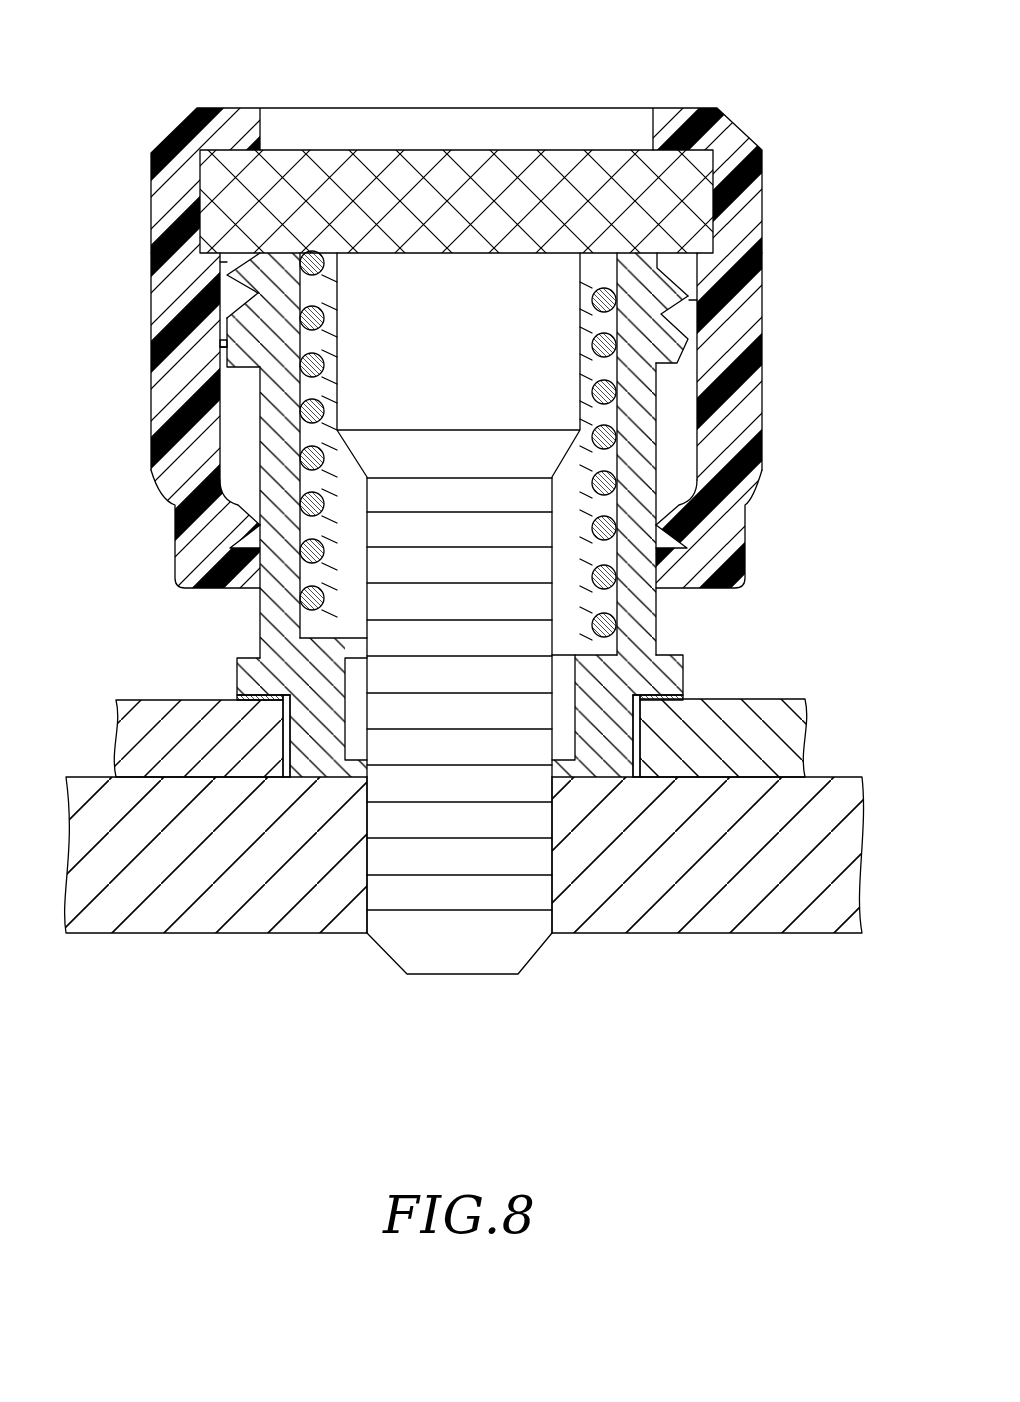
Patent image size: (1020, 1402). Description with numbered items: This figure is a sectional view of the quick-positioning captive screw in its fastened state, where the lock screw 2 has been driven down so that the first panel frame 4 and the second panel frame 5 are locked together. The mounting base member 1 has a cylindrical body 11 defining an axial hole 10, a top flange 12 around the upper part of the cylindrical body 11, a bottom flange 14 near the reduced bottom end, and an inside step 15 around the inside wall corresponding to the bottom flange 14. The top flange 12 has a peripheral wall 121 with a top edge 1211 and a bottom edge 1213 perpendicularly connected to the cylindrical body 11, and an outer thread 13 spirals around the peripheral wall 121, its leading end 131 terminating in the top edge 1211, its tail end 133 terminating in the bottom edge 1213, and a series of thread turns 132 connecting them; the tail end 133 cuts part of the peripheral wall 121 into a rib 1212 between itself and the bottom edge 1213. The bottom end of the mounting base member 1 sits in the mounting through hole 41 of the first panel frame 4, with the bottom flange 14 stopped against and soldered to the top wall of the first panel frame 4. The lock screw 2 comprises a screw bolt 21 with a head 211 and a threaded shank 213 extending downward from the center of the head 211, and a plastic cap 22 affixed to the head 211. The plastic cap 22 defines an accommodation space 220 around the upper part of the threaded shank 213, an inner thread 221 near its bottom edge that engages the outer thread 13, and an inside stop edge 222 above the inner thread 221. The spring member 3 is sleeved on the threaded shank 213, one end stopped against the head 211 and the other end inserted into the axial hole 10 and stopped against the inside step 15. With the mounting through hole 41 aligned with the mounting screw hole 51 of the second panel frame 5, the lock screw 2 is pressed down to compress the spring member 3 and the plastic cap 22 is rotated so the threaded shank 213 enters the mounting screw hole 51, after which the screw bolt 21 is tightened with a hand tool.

The mounting base member 1 is at (659, 473).
The axial hole 10 is at (619, 443).
The cylindrical body 11 is at (662, 517).
The top flange 12 is at (636, 400).
The peripheral wall 121 is at (690, 350).
The top edge 1211 is at (669, 276).
The rib 1212 is at (240, 368).
The bottom edge 1213 is at (232, 379).
The outer thread 13 is at (764, 258).
The leading end 131 is at (256, 262).
The thread turns 132 is at (690, 300).
The tail end 133 is at (231, 349).
The bottom flange 14 is at (677, 670).
The inside step 15 is at (594, 657).
The lock screw 2 is at (151, 95).
The screw bolt 21 is at (467, 147).
The head 211 is at (392, 150).
The threaded shank 213 is at (443, 671).
The plastic cap 22 is at (147, 235).
The accommodation space 220 is at (235, 438).
The inner thread 221 is at (219, 565).
The inside stop edge 222 is at (240, 478).
The spring member 3 is at (306, 602).
The first panel frame 4 is at (182, 752).
The mounting through hole 41 is at (282, 740).
The second panel frame 5 is at (258, 903).
The mounting screw hole 51 is at (368, 903).